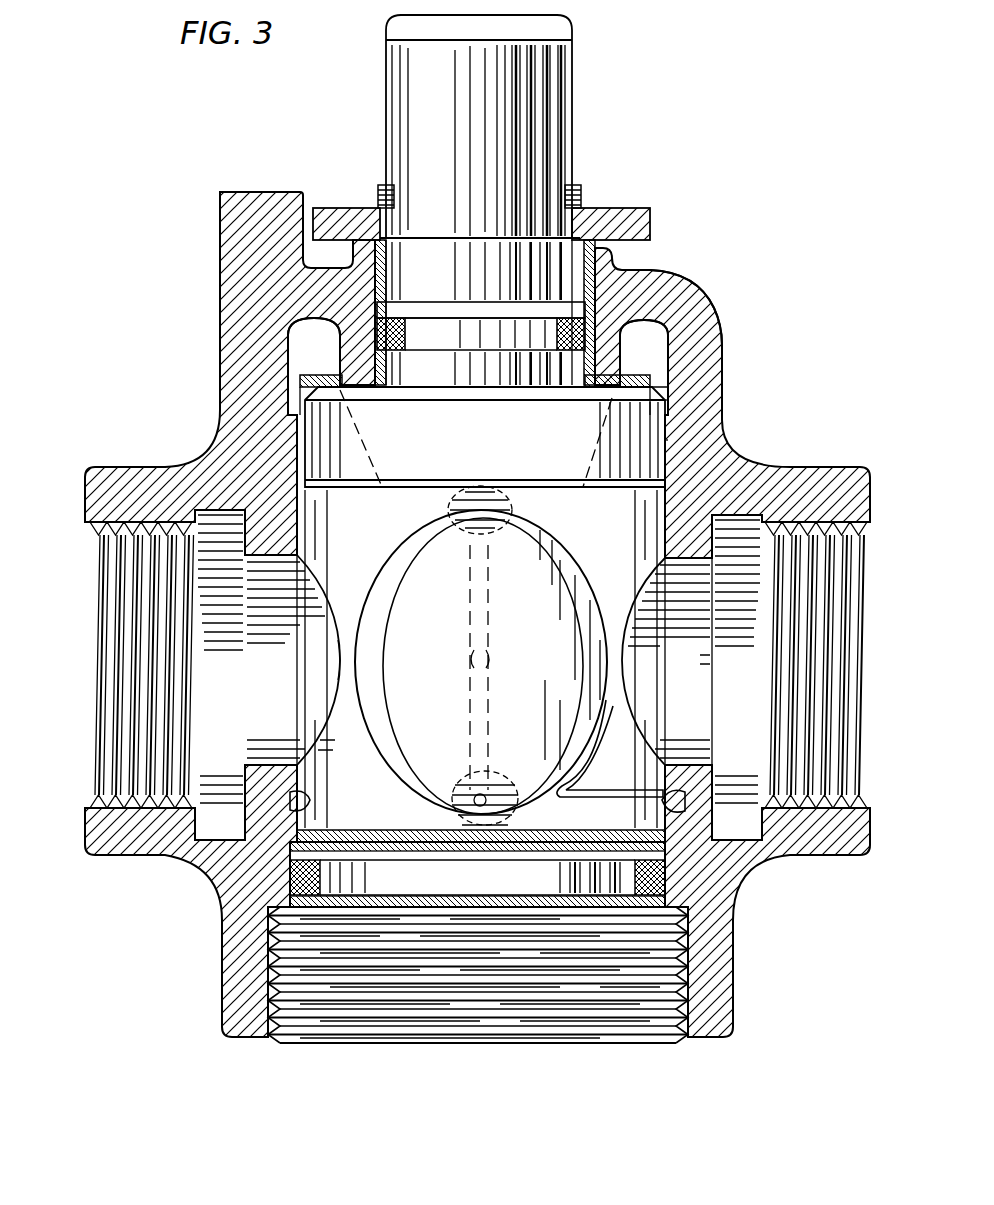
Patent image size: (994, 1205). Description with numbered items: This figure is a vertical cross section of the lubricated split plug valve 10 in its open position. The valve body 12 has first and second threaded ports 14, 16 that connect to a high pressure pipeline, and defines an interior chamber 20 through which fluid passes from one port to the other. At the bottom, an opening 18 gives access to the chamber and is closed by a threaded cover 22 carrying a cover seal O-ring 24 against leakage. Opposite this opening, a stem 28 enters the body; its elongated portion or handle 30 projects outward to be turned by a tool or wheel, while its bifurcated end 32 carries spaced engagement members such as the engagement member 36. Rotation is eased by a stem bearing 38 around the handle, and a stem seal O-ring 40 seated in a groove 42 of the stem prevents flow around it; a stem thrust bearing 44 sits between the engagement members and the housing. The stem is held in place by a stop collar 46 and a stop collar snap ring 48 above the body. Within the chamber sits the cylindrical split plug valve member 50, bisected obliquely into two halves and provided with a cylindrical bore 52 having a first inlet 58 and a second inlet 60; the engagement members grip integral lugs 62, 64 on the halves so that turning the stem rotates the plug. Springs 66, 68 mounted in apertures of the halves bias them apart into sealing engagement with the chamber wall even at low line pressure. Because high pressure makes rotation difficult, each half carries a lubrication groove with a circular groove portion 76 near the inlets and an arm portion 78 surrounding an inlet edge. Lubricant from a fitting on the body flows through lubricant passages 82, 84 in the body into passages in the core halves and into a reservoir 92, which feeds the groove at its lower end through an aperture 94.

The lubricated split plug valve 10 is at (262, 175).
The valve body 12 is at (684, 298).
The first threaded port 14 is at (782, 578).
The second threaded port 16 is at (175, 578).
The opening 18 is at (690, 1046).
The interior chamber 20 is at (670, 405).
The threaded cover 22 is at (320, 1040).
The cover seal O-ring 24 is at (664, 878).
The stem 28 is at (578, 130).
The elongated portion or handle 30 is at (493, 167).
The bifurcated end 32 is at (300, 412).
The engagement member 36 is at (489, 452).
The stem bearing 38 is at (386, 275).
The stem seal O-ring 40 is at (640, 272).
The groove 42 is at (692, 297).
The stem thrust bearing 44 is at (598, 384).
The stop collar 46 is at (650, 215).
The stop collar snap ring 48 is at (582, 198).
The cylindrical split plug valve member 50 is at (670, 440).
The cylindrical bore 52 is at (335, 650).
The first inlet 58 is at (337, 668).
The second inlet 60 is at (627, 650).
The lug 62 is at (320, 376).
The lug 64 is at (652, 385).
The spring 66 is at (488, 786).
The spring 68 is at (456, 535).
The circular groove portion 76 is at (582, 612).
The arm portion 78 is at (610, 748).
The lubricant passage 82 is at (292, 793).
The lubricant passage 84 is at (668, 792).
The reservoir 92 is at (488, 625).
The aperture 94 is at (474, 800).